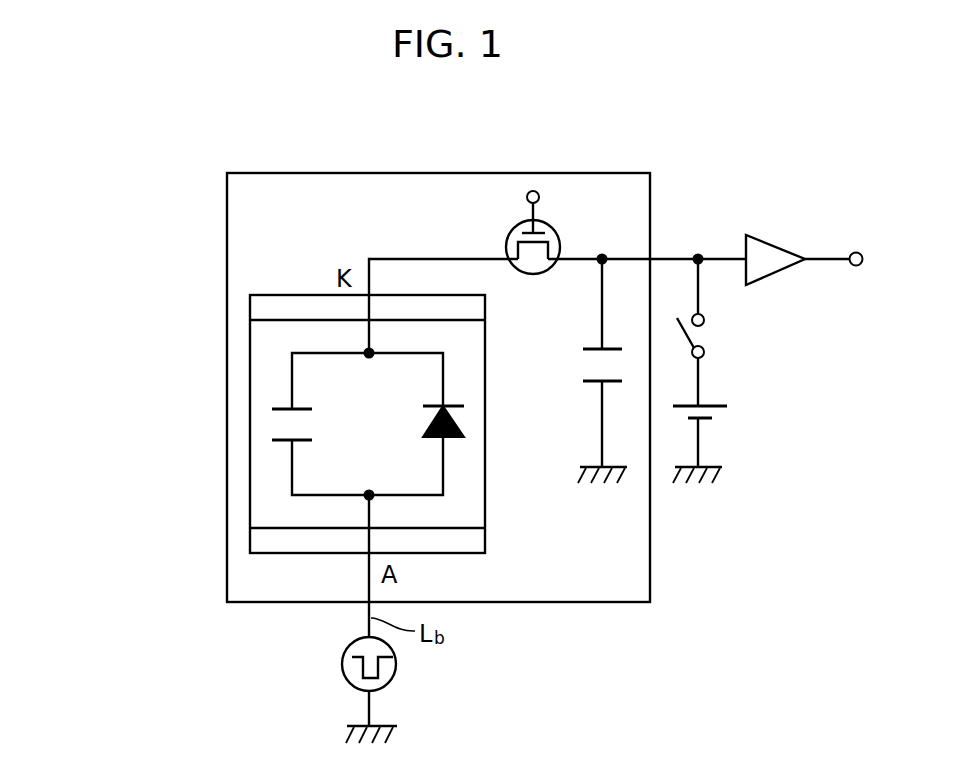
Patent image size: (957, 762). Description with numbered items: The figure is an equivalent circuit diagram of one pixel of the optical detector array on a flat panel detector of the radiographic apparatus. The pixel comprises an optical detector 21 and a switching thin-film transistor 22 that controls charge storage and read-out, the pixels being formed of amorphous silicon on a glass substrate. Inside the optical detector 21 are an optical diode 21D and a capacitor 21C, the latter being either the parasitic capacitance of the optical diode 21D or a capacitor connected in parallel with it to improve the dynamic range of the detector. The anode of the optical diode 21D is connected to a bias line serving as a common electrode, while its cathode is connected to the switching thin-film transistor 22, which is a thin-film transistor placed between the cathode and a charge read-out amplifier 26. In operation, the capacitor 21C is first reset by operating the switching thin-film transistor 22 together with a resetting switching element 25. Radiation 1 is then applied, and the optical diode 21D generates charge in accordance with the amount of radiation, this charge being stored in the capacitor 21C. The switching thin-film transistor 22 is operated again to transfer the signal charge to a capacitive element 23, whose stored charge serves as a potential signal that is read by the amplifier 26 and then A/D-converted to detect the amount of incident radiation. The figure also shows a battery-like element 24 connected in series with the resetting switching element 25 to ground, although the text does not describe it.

The radiation 1 is at (364, 387).
The optical detector 21 is at (283, 306).
The capacitor 21C is at (305, 427).
The optical diode 21D is at (431, 425).
The switching thin-film transistor 22 is at (508, 241).
The capacitive element 23 is at (577, 366).
The bias power source (battery) 24 is at (710, 413).
The resetting switching element 25 is at (707, 331).
The charge read-out amplifier 26 is at (764, 257).